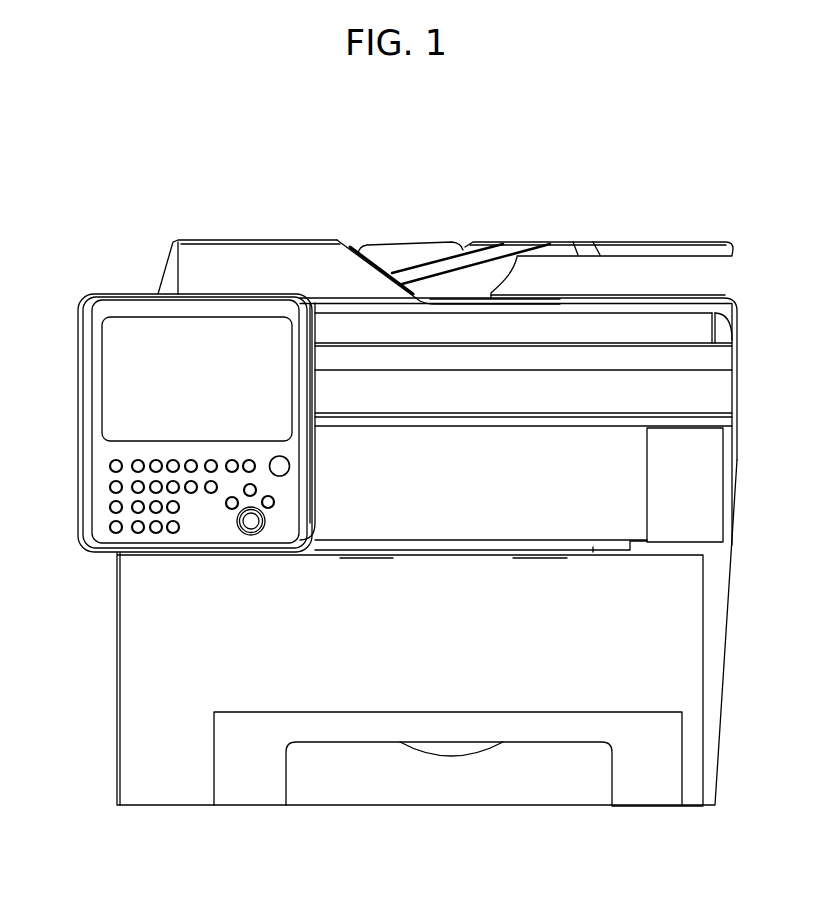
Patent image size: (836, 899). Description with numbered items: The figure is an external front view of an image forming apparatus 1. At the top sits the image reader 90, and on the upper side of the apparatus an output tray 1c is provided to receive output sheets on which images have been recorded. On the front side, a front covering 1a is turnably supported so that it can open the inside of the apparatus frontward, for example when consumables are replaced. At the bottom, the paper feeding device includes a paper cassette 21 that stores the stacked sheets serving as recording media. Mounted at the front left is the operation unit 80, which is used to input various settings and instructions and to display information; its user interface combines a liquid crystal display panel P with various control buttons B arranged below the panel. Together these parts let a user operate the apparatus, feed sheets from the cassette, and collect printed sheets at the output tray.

The image forming apparatus 1 is at (110, 243).
The front covering 1a is at (565, 652).
The output tray 1c is at (593, 547).
The paper cassette 21 is at (350, 792).
The operation unit 80 is at (87, 353).
The image reader 90 is at (748, 346).
The liquid crystal display panel P is at (225, 337).
The control buttons B is at (136, 489).